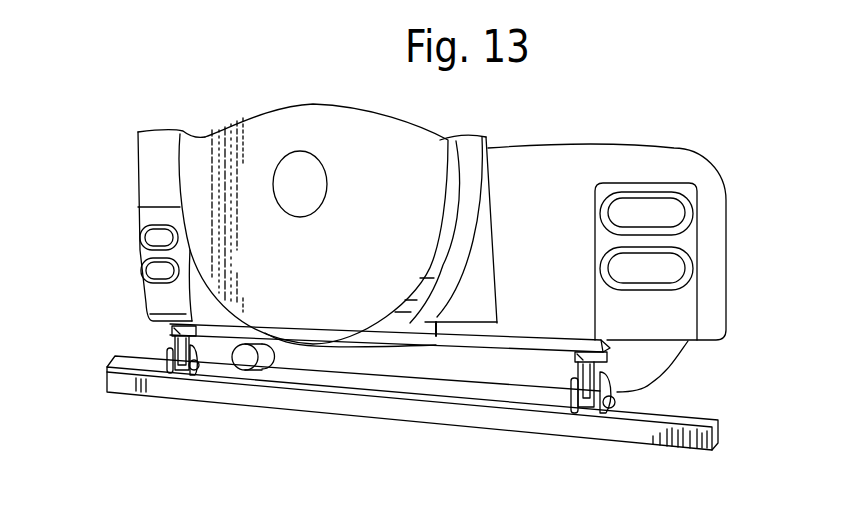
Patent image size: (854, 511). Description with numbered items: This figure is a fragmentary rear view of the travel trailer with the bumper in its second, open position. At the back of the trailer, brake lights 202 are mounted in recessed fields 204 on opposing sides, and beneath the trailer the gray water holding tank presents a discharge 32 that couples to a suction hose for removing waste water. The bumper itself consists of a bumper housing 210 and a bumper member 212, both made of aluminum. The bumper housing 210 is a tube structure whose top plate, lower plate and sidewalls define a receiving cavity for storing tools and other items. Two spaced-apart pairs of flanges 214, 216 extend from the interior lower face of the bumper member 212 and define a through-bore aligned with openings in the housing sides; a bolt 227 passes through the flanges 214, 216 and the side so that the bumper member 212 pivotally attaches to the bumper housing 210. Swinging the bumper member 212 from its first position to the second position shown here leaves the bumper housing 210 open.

The discharge 32 is at (277, 359).
The brake lights 202 is at (668, 272).
The recessed fields 204 is at (688, 310).
The bumper housing 210 is at (507, 363).
The bumper member 212 is at (722, 431).
The flanges 214 is at (166, 359).
The flanges 216 is at (570, 400).
The bolt 227 is at (582, 410).